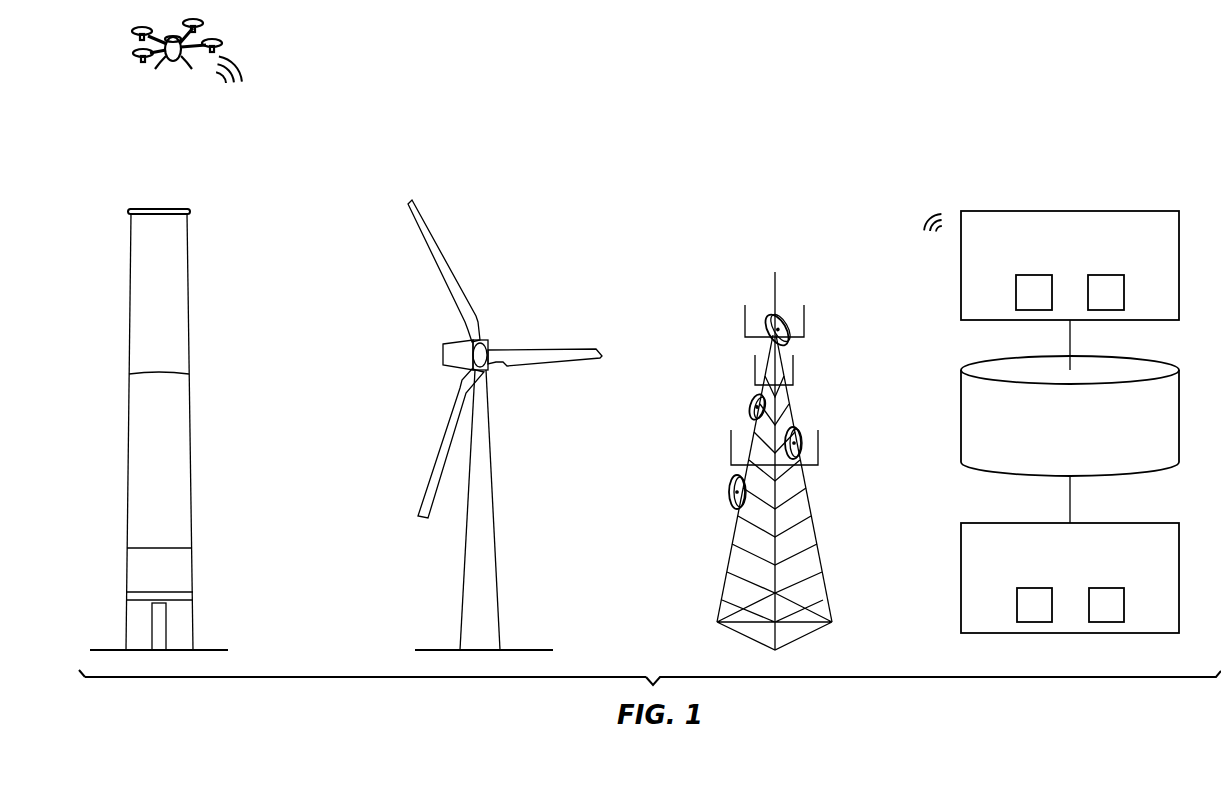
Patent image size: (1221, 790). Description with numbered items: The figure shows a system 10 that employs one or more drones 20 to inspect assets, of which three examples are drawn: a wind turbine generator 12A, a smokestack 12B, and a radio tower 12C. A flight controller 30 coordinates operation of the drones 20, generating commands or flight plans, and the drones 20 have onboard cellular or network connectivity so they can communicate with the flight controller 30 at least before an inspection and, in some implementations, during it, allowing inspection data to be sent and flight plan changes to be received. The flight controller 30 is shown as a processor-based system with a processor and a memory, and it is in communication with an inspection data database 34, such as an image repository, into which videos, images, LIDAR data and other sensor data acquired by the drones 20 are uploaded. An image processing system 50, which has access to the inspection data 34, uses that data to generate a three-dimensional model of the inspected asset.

The system 10 is at (878, 142).
The drone 20 is at (165, 90).
The wind turbine generator 12A is at (509, 299).
The smokestack 12B is at (205, 190).
The radio tower 12C is at (810, 271).
The flight controller 30 is at (1051, 254).
The inspection data database 34 is at (1181, 413).
The image processing system 50 is at (1089, 578).